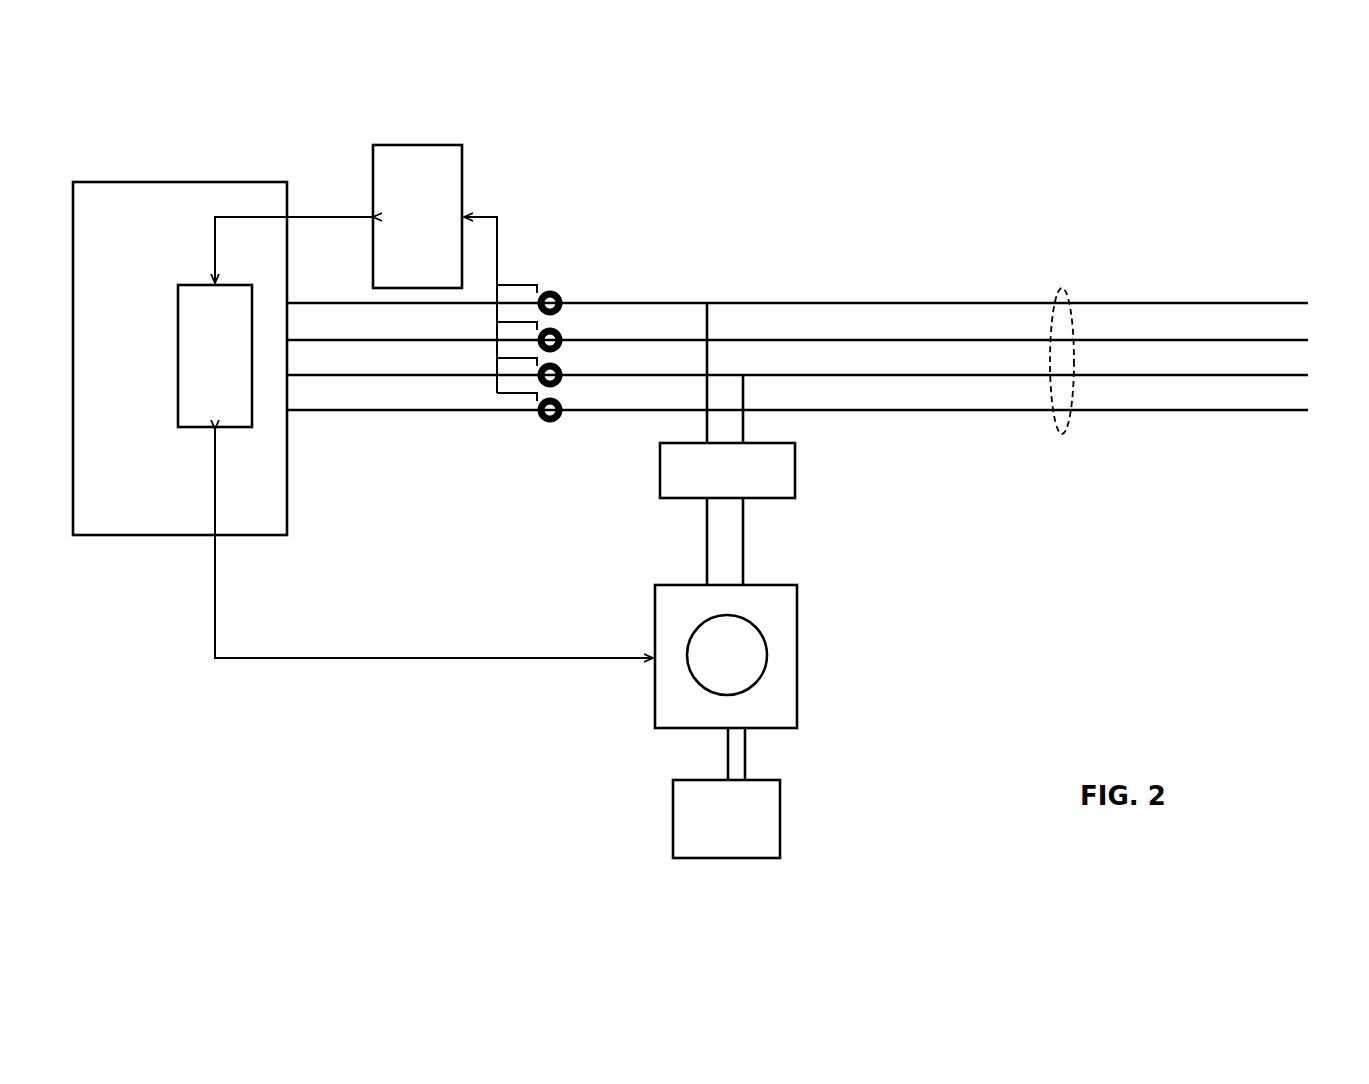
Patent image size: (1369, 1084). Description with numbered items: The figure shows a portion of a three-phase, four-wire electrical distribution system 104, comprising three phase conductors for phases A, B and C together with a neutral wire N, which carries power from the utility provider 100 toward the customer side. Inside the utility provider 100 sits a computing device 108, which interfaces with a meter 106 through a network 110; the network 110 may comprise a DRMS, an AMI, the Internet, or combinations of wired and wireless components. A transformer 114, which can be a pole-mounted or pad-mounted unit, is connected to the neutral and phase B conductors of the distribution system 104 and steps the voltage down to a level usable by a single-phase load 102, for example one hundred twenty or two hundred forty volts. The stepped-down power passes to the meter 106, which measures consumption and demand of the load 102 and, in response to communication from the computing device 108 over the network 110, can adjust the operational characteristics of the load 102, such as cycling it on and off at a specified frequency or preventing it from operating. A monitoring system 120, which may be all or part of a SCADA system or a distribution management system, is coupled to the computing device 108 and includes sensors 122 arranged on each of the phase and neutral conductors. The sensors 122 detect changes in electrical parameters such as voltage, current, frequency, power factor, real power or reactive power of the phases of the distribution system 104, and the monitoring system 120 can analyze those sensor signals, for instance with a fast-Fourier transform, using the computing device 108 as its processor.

The utility provider 100 is at (180, 358).
The computing device 108 is at (275, 322).
The monitoring system 120 is at (455, 273).
The sensors 122 is at (507, 384).
The transformer 114 is at (727, 444).
The meter 106 is at (726, 656).
The load 102 is at (726, 793).
The network 110 is at (434, 569).
The distribution system 104 is at (1060, 432).